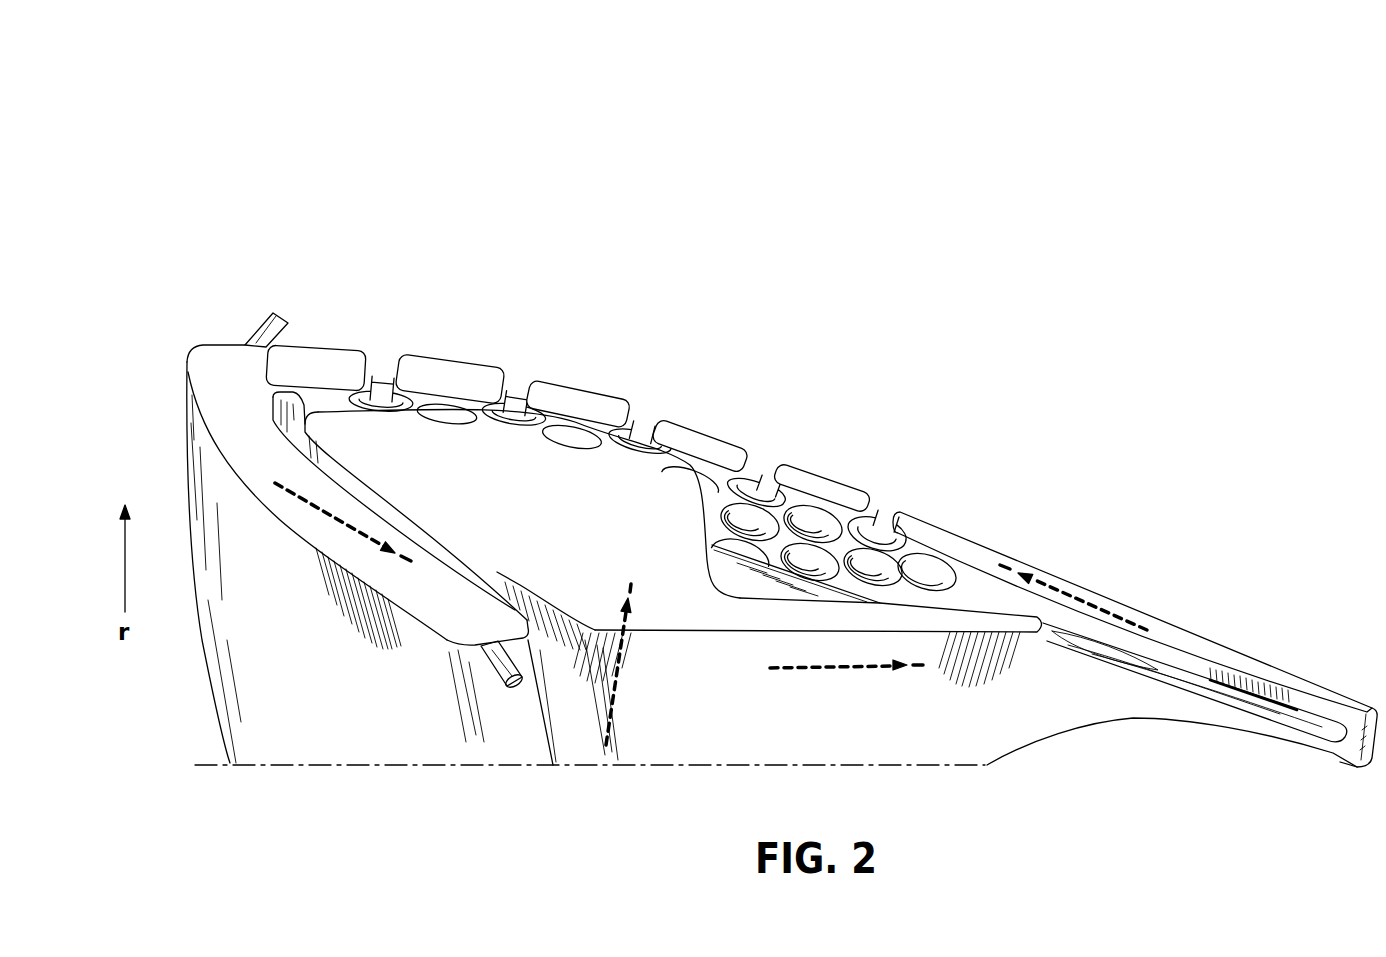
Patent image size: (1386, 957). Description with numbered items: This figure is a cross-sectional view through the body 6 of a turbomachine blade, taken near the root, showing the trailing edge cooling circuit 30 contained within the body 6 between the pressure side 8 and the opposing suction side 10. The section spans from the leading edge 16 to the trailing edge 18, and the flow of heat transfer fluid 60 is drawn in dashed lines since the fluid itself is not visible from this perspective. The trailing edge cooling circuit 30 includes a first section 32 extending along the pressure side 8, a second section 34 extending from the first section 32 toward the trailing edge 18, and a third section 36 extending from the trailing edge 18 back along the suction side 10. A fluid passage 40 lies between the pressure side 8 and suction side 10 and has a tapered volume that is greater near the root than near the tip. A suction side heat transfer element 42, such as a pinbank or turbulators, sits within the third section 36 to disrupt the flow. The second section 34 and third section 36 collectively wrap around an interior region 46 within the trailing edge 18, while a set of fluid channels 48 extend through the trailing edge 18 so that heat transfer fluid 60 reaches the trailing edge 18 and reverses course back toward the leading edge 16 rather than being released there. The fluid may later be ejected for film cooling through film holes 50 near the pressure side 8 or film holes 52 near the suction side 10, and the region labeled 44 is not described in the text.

The body 6 is at (232, 132).
The pressure side 8 is at (730, 795).
The suction side 10 is at (600, 352).
The leading edge 16 is at (150, 392).
The trailing edge 18 is at (1340, 630).
The trailing edge cooling circuit 30 is at (1143, 500).
The first section 32 is at (582, 598).
The second section 34 is at (765, 611).
The third section 36 is at (213, 387).
The fluid passage 40 is at (587, 522).
The suction side heat transfer element 42 is at (752, 512).
The lower surface portion 44 is at (685, 727).
The interior region 46 is at (310, 402).
The fluid channels 48 is at (1193, 668).
The film holes 50 is at (487, 637).
The film holes 52 is at (290, 313).
The heat transfer fluid 60 is at (1108, 574).